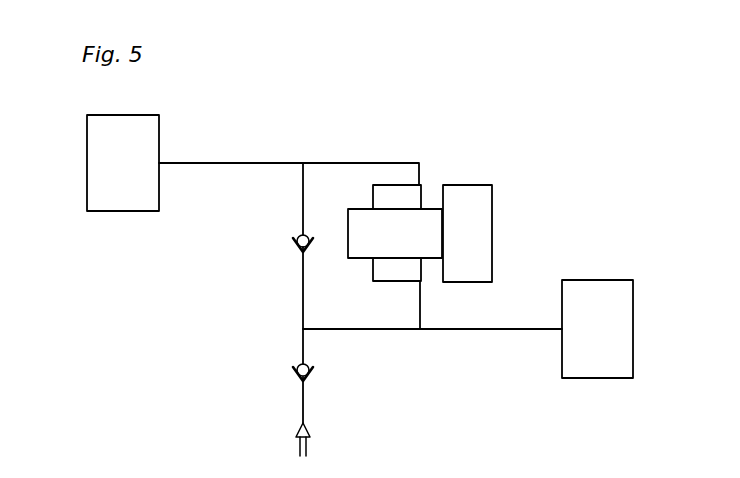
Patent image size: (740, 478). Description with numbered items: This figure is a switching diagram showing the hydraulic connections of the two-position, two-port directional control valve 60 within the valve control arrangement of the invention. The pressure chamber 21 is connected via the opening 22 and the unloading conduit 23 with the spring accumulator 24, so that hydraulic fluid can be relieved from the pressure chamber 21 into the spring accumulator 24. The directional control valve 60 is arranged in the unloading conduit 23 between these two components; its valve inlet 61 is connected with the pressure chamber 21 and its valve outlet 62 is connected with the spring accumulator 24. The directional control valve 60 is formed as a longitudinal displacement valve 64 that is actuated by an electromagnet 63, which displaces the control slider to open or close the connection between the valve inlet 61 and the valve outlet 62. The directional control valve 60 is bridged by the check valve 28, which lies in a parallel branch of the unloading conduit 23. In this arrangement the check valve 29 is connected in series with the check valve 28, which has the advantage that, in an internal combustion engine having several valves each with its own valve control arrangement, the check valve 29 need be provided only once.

The pressure chamber 21 is at (108, 200).
The opening 22 is at (190, 163).
The unloading conduit 23 is at (314, 163).
The spring accumulator 24 is at (581, 293).
The check valve 28 is at (293, 244).
The check valve 29 is at (295, 372).
The 2/2 directional control valve 60 is at (436, 165).
The valve inlet 61 is at (423, 195).
The valve outlet 62 is at (420, 268).
The electromagnet 63 is at (469, 206).
The longitudinal displacement valve 64 is at (388, 220).